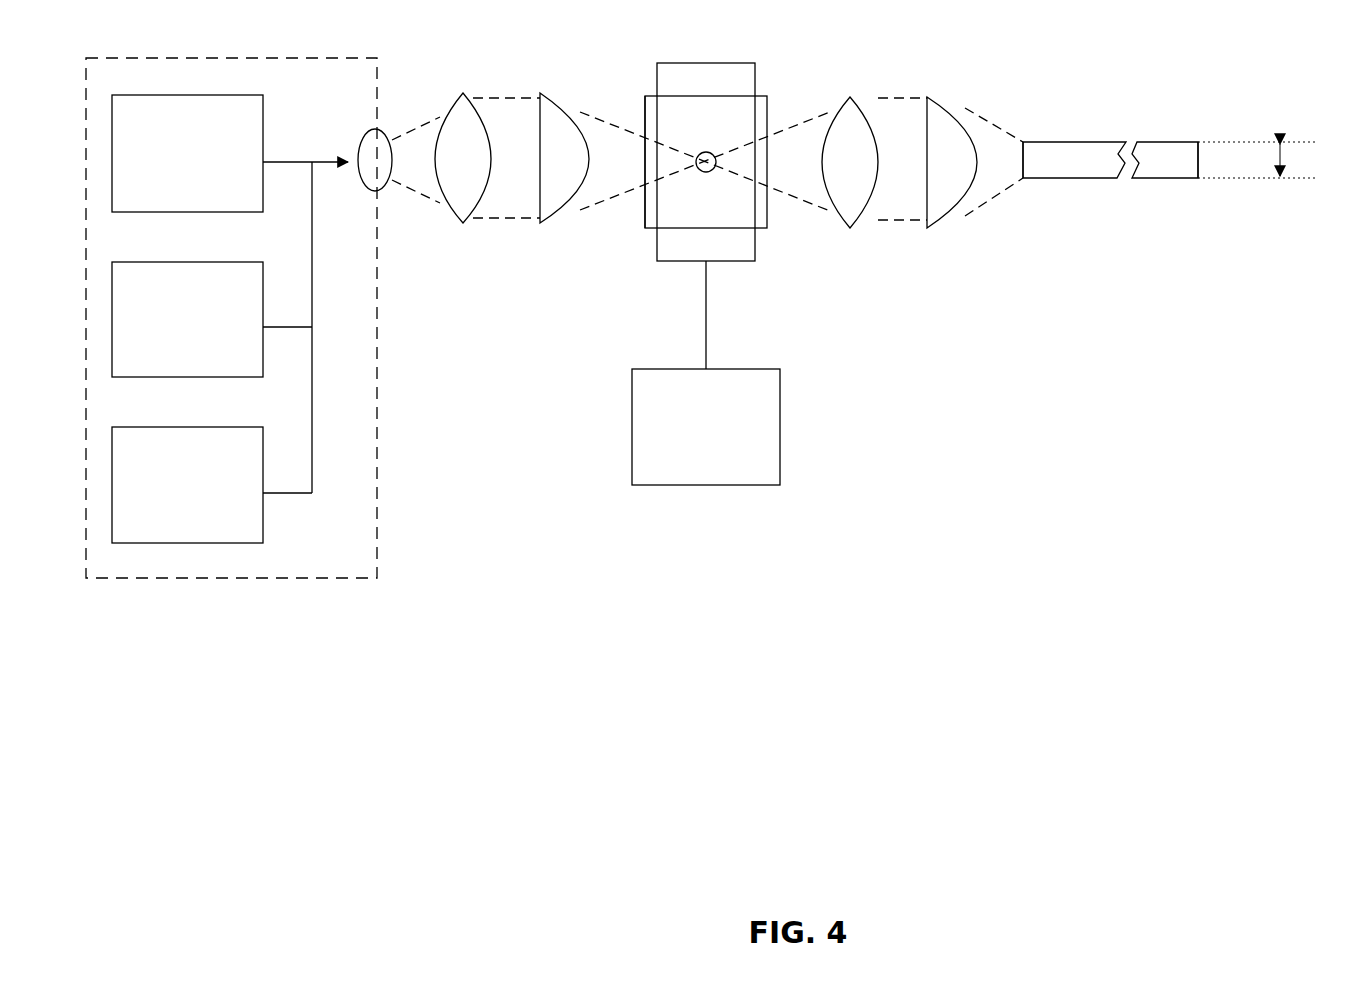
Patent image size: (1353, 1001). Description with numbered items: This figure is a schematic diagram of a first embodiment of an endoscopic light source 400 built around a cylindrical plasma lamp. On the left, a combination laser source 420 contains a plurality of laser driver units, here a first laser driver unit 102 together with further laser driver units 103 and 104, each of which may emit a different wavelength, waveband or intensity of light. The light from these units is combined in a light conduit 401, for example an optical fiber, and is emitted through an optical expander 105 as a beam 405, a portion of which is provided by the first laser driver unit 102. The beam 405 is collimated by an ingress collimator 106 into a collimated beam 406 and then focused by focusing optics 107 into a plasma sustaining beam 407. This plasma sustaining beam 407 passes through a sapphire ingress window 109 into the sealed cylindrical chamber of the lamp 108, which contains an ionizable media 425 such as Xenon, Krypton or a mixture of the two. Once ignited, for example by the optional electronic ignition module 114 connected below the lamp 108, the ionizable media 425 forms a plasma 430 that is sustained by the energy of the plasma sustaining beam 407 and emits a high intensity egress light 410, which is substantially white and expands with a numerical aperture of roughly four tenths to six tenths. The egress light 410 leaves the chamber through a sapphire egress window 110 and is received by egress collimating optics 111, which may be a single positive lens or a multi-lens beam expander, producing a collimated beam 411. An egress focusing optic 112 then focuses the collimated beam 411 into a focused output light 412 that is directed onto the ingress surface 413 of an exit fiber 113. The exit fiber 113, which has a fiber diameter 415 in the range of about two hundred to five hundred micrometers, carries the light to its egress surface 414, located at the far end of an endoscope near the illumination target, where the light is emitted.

The first laser driver unit 102 is at (187, 153).
The laser driver unit 103 is at (187, 319).
The laser driver unit 104 is at (187, 485).
The optical expander 105 is at (370, 127).
The ingress collimator 106 is at (463, 158).
The focusing optics 107 is at (564, 158).
The lamp 108 is at (708, 63).
The ingress window 109 is at (647, 207).
The egress window 110 is at (767, 220).
The egress collimating optics 111 is at (850, 162).
The egress focusing optics 112 is at (952, 162).
The exit fiber 113 is at (1110, 160).
The electronic ignition module 114 is at (706, 427).
The endoscopic light source 400 is at (431, 686).
The light conduit 401 is at (322, 158).
The beam 405 is at (422, 185).
The collimated beam 406 is at (500, 210).
The plasma sustaining beam 407 is at (602, 147).
The high intensity egress light 410 is at (790, 155).
The collimated beam 411 is at (897, 122).
The focused output light 412 is at (995, 138).
The ingress surface 413 is at (1010, 166).
The egress surface 414 is at (1209, 165).
The fiber diameter 415 is at (1298, 167).
The combination laser source 420 is at (231, 318).
The ionizable media 425 is at (740, 110).
The plasma 430 is at (710, 172).